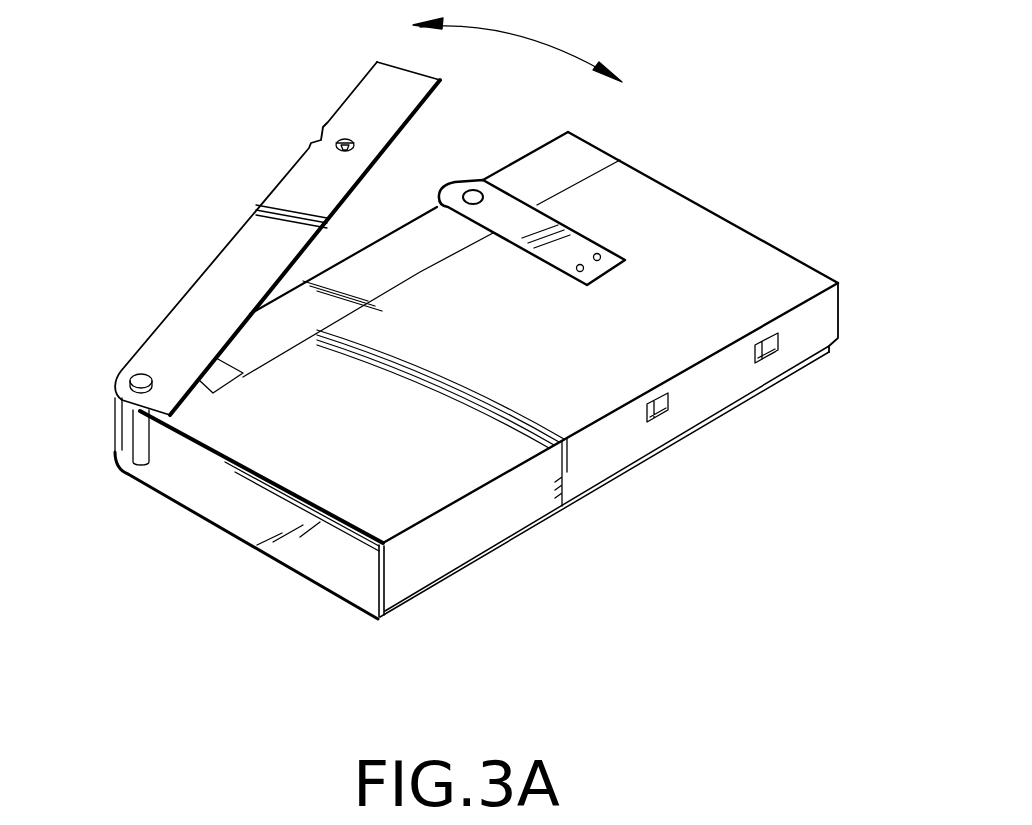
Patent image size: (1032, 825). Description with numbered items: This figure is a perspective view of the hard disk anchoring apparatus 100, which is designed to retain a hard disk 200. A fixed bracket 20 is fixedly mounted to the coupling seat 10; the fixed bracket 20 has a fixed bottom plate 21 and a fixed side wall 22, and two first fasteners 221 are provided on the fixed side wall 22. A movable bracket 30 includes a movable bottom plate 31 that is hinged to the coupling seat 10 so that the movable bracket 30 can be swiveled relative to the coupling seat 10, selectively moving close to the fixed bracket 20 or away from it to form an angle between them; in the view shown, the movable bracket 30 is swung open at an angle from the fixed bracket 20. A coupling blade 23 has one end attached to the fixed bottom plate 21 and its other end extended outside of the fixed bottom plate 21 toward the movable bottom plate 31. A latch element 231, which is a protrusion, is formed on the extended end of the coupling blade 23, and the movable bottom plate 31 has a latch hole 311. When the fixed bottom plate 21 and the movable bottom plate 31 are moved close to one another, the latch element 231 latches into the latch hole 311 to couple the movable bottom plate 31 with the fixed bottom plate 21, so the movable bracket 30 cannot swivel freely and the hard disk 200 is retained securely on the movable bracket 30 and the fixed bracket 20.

The hard disk anchoring apparatus 100 is at (219, 641).
The coupling seat 10 is at (235, 520).
The fixed bracket 20 is at (613, 473).
The hard disk 200 is at (580, 157).
The fixed bottom plate 21 is at (412, 503).
The fixed side wall 22 is at (517, 503).
The first fasteners 221 is at (770, 357).
The coupling blade 23 is at (573, 250).
The latch element 231 is at (474, 184).
The movable bracket 30 is at (167, 317).
The movable bottom plate 31 is at (247, 243).
The latch hole 311 is at (346, 138).